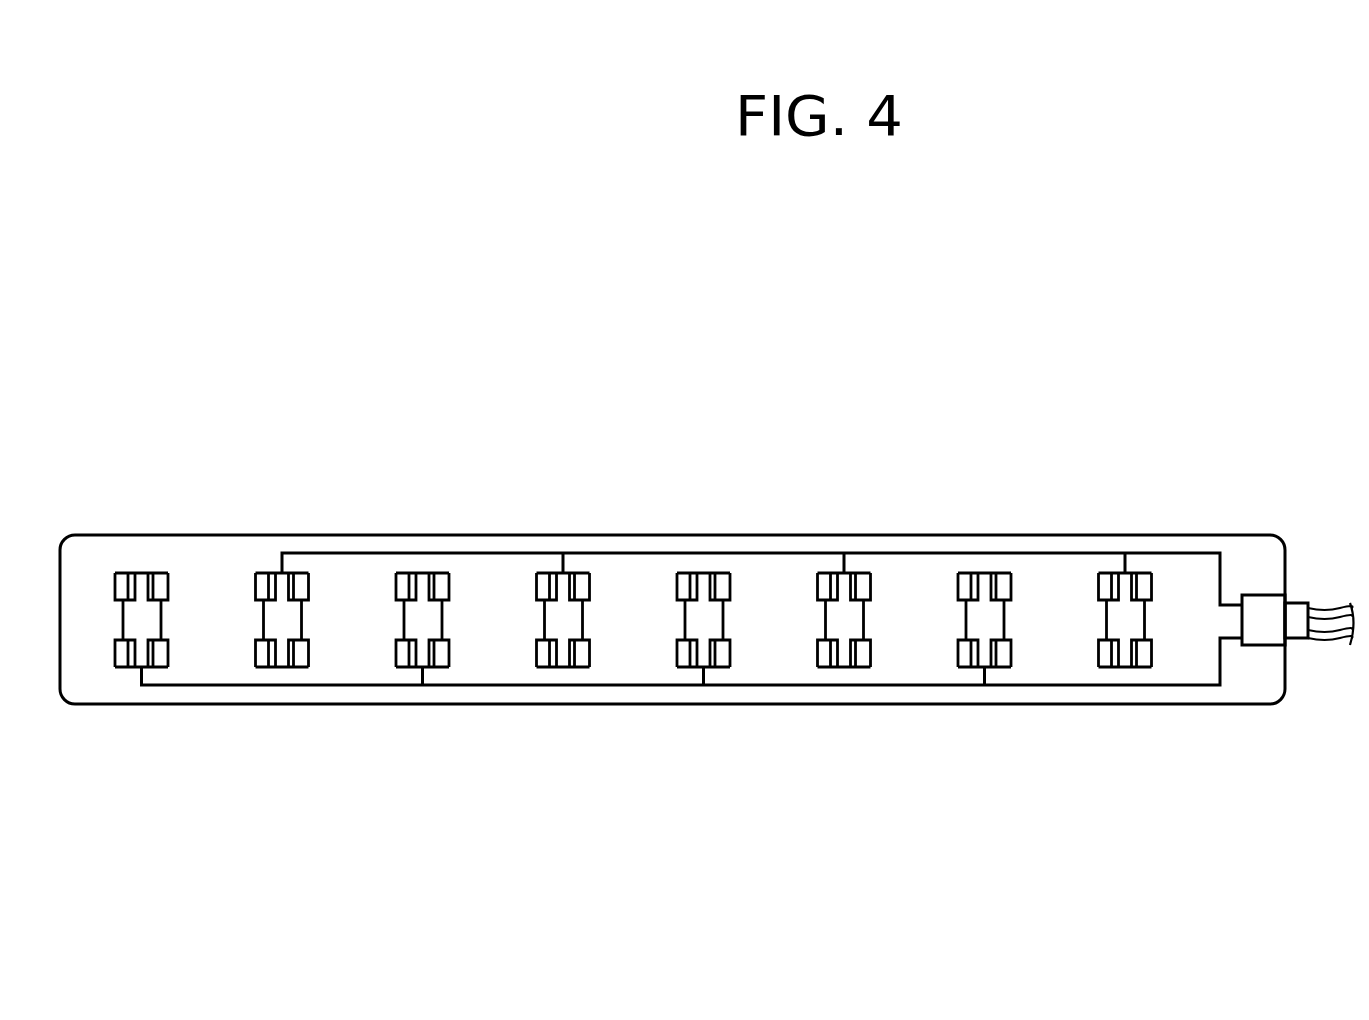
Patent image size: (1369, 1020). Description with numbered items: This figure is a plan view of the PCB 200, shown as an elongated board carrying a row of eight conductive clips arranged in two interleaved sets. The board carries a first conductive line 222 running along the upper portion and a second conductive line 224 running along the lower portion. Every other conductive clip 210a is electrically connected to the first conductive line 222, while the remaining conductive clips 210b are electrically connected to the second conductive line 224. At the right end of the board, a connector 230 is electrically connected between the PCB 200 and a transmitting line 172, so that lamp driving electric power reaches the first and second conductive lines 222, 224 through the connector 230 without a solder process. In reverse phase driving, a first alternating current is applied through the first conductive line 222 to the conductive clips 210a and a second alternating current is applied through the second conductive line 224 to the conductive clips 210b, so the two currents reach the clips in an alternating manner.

The PCB 200 is at (648, 500).
The conductive clips 210a is at (260, 585).
The conductive clips 210b is at (160, 655).
The first conductive line 222 is at (1186, 555).
The second conductive line 224 is at (1198, 687).
The connector 230 is at (1259, 595).
The transmitting line 172 is at (1317, 608).